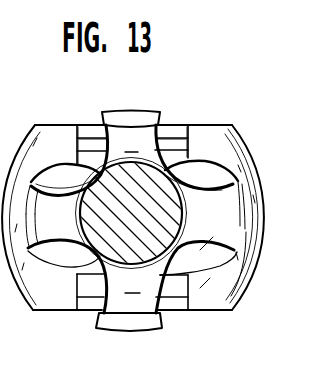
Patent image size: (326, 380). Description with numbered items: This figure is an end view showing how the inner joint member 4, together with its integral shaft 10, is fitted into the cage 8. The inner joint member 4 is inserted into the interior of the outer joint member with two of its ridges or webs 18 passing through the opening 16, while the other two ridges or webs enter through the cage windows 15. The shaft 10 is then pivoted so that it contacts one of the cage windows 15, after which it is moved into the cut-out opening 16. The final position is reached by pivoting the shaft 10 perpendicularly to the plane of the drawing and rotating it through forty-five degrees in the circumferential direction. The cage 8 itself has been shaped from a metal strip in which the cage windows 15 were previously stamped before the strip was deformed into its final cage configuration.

The inner joint member 4 is at (215, 210).
The cage 8 is at (207, 293).
The shaft 10 is at (148, 200).
The cage window 15 is at (246, 237).
The opening 16 is at (187, 155).
The ridge or web 18 is at (118, 137).